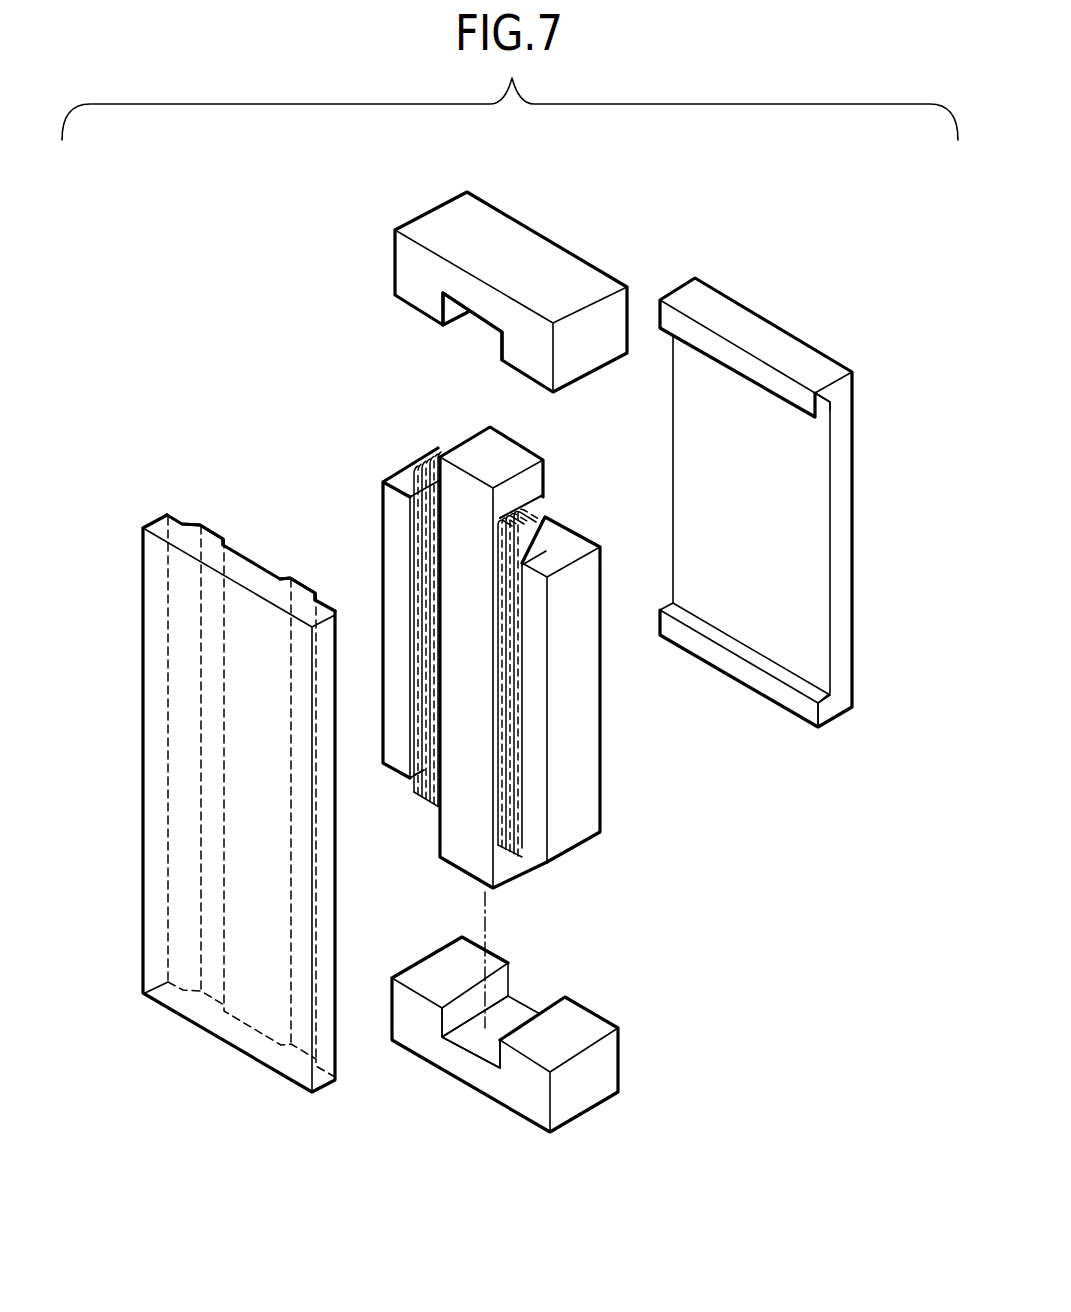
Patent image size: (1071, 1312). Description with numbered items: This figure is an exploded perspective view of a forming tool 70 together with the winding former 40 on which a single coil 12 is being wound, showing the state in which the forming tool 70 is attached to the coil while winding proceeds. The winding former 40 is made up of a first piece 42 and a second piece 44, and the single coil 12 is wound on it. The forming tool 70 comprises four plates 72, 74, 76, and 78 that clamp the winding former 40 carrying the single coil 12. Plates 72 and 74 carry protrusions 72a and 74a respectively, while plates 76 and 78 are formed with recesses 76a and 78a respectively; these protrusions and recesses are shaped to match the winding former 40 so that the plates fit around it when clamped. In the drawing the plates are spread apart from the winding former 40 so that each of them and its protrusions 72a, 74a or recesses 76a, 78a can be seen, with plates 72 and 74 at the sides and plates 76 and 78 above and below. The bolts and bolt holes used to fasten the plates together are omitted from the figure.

The forming tool 70 is at (794, 508).
The plate 74 is at (840, 608).
The protrusions 74a is at (782, 387).
The plate 76 is at (538, 262).
The recess 76a is at (470, 332).
The plate 78 is at (583, 1025).
The recess 78a is at (467, 1037).
The winding former 40 is at (612, 749).
The first piece 42 is at (476, 453).
The second piece 44 is at (588, 812).
The single coil 12 is at (545, 504).
The plate 72 is at (183, 530).
The protrusions 72a is at (297, 580).